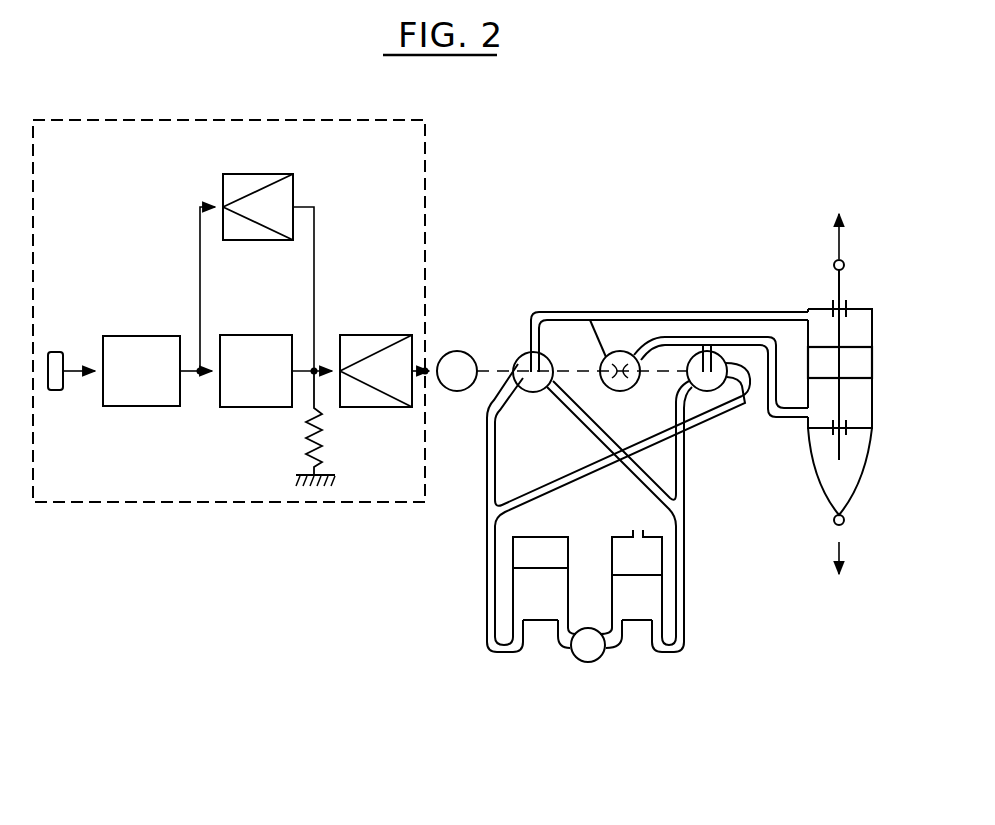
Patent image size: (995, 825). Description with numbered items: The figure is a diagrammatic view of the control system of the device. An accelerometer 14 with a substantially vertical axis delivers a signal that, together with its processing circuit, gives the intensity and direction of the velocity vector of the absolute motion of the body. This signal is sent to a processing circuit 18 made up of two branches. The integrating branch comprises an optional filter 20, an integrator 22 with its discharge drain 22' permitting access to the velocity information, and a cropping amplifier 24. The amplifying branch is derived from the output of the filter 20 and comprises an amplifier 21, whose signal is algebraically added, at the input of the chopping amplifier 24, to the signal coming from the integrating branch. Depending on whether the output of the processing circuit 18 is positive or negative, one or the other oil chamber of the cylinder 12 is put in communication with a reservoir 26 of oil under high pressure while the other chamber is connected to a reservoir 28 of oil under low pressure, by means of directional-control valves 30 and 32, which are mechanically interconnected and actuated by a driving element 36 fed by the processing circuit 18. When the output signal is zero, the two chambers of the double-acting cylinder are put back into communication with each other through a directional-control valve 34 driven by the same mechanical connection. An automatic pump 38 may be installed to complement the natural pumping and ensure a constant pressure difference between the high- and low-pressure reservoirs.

The cylinder 12 is at (876, 318).
The accelerometer 14 is at (57, 352).
The processing circuit 18 is at (160, 512).
The filter 20 is at (141, 337).
The amplifier 21 is at (252, 175).
The integrator 22 is at (256, 354).
The discharge drain 22' is at (288, 428).
The cropping amplifier 24 is at (357, 336).
The reservoir of oil under high pressure 26 is at (523, 603).
The reservoir of oil under low pressure 28 is at (654, 604).
The directional-control valve 30 is at (535, 392).
The directional-control valve 32 is at (710, 392).
The directional-control valve 34 is at (622, 392).
The driving element 36 is at (472, 350).
The automatic pump 38 is at (598, 668).